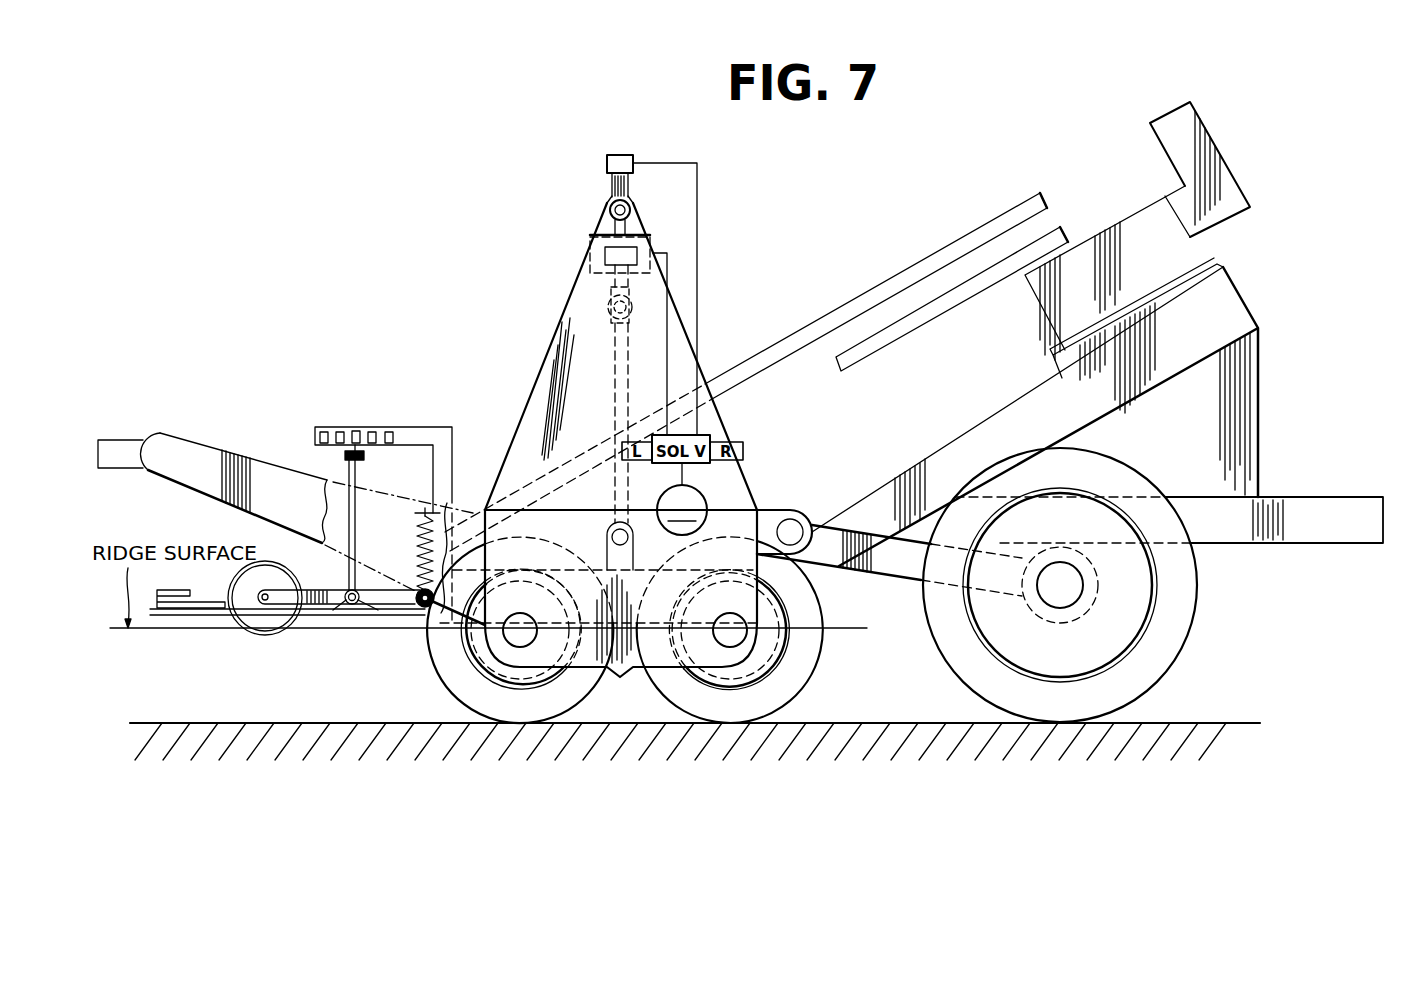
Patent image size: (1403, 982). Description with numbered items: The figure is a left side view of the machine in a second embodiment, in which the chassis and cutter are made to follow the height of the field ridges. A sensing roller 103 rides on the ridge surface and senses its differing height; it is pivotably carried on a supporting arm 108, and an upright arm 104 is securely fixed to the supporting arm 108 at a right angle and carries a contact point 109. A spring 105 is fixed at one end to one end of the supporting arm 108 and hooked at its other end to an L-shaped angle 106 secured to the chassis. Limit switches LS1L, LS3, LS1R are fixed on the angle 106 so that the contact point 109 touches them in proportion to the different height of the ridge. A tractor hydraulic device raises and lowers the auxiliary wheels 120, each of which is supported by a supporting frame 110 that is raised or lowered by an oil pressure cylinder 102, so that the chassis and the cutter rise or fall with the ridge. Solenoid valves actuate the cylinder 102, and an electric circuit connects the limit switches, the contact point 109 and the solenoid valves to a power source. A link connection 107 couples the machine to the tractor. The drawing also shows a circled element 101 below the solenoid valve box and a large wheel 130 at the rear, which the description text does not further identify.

The control unit 101 is at (682, 499).
The oil pressure cylinder 102 is at (608, 180).
The sensing roller 103 is at (265, 633).
The upright arm 104 is at (356, 558).
The spring 105 is at (418, 527).
The L-shaped angle 106 is at (452, 462).
The link connection 107 is at (120, 446).
The supporting arm 108 is at (391, 605).
The contact point 109 is at (363, 455).
The supporting frame 110 is at (620, 678).
The auxiliary wheels 120 is at (455, 684).
The rear wheel 130 is at (1190, 622).
The limit switch LS1L is at (328, 408).
The limit switch LS3 is at (356, 431).
The limit switch LS1R is at (374, 431).